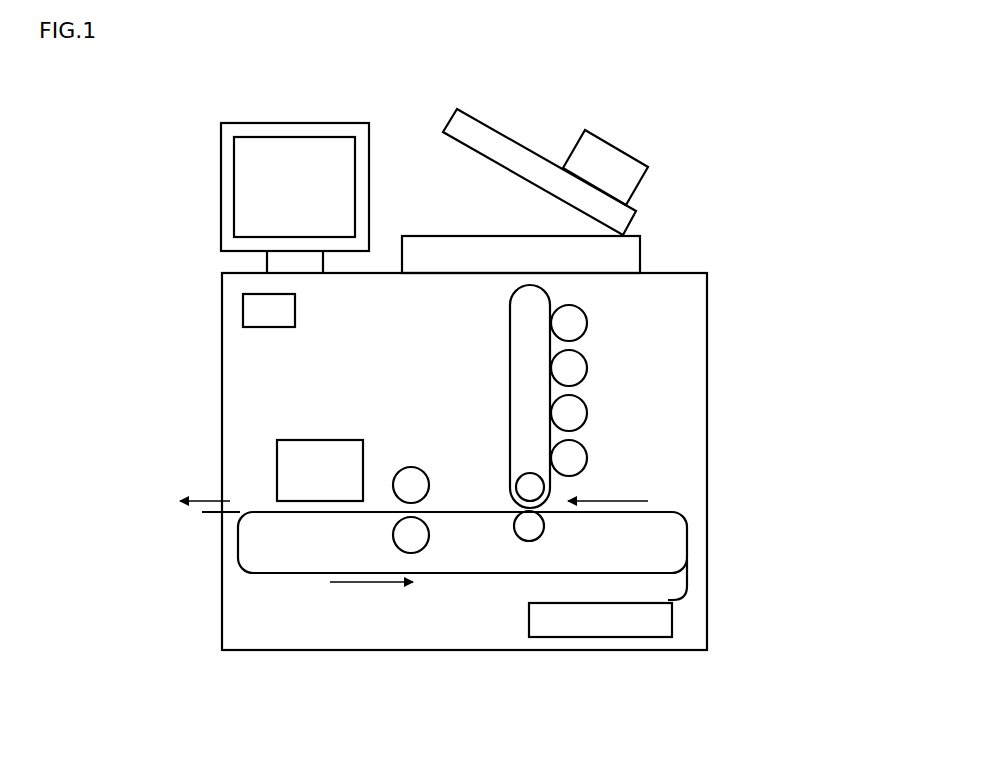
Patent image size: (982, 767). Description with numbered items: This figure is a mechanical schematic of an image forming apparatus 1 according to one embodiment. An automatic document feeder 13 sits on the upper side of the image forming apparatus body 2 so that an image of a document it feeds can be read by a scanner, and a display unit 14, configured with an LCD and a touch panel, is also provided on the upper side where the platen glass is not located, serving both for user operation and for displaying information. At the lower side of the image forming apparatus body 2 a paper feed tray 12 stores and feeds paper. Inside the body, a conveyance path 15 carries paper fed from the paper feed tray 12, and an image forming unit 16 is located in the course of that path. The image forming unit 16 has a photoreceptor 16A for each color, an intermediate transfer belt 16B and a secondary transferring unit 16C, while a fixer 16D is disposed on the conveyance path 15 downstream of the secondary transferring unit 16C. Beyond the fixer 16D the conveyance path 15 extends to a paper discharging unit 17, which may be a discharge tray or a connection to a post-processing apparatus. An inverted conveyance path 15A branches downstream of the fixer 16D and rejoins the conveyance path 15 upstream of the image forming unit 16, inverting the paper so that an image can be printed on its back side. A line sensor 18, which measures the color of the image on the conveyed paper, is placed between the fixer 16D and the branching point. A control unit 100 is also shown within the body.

The image forming apparatus 1 is at (217, 675).
The image forming apparatus body 2 is at (707, 462).
The paper feed tray 12 is at (672, 617).
The automatic document feeder (ADF) 13 is at (598, 113).
The display unit 14 is at (296, 123).
The conveyance path 15 is at (501, 570).
The inverted conveyance path 15A is at (463, 573).
The image forming unit 16 is at (601, 396).
The photoreceptor 16A is at (596, 349).
The intermediate transfer belt 16B is at (510, 343).
The secondary transferring unit 16C is at (543, 530).
The fixer 16D is at (411, 467).
The paper discharging unit 17 is at (210, 512).
The line sensor 18 is at (322, 440).
The control unit 100 is at (243, 312).